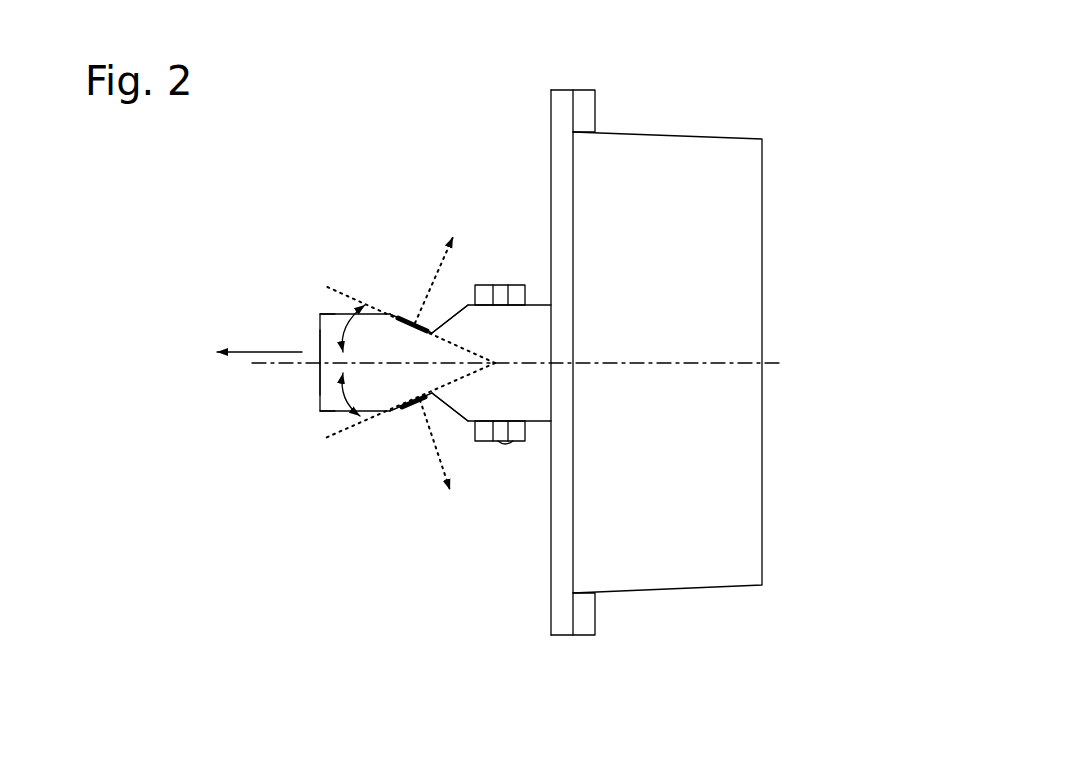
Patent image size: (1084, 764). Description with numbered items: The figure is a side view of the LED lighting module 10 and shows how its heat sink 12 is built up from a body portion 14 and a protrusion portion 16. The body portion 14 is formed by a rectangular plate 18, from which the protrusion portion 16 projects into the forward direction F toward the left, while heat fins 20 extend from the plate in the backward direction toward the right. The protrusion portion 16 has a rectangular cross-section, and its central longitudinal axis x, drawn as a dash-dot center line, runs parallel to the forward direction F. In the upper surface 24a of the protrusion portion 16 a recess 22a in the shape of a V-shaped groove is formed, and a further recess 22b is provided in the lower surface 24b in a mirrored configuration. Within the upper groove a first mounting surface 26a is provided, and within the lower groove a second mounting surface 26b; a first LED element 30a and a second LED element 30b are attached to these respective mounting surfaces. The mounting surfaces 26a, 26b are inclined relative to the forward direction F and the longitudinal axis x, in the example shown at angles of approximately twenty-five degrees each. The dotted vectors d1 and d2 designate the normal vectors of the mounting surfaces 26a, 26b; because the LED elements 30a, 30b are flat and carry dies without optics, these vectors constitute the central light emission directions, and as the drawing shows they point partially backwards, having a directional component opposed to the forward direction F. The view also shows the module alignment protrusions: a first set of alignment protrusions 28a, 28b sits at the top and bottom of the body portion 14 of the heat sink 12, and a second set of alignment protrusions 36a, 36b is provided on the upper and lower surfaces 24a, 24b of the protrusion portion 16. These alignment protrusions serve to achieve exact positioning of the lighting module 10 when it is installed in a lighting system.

The LED lighting module 10 is at (792, 115).
The heat sink 12 is at (488, 132).
The body portion 14 is at (678, 105).
The protrusion portion 16 is at (295, 420).
The rectangular plate 18 is at (560, 573).
The heat fins 20 is at (743, 298).
The recess 22a is at (450, 292).
The further recess 22b is at (403, 424).
The upper surface 24a is at (327, 312).
The lower surface 24b is at (327, 413).
The first mounting surface 26a is at (396, 317).
The second mounting surface 26b is at (432, 398).
The alignment protrusion 28a is at (562, 100).
The alignment protrusion 28b is at (582, 623).
The first LED element 30a is at (402, 318).
The second LED element 30b is at (410, 403).
The alignment protrusion 36a is at (510, 300).
The alignment protrusion 36b is at (517, 433).
The normal vector d1 is at (443, 262).
The normal vector d2 is at (440, 478).
The forward direction F is at (259, 335).
The central longitudinal axis x is at (713, 363).